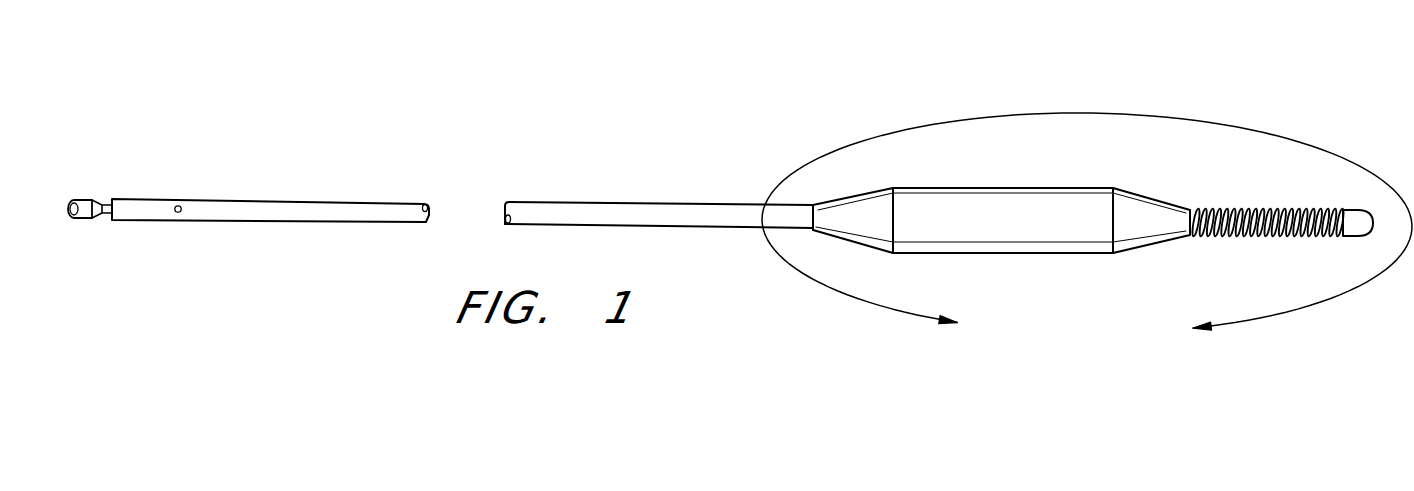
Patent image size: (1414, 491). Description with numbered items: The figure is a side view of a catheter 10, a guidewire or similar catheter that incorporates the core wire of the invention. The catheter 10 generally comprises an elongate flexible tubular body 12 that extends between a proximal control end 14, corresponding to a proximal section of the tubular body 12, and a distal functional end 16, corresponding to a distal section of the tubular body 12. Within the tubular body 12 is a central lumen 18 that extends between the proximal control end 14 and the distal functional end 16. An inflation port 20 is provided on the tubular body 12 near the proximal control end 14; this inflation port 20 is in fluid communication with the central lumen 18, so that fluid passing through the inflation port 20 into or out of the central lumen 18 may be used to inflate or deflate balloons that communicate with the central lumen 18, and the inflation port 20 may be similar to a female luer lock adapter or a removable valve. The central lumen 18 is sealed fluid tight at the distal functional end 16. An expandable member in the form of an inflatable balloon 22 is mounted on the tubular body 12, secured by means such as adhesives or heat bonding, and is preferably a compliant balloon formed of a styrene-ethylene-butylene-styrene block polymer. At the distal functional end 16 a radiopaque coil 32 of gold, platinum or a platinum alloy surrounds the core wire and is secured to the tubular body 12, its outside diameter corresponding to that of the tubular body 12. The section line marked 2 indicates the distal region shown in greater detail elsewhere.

The catheter 10 is at (607, 52).
The tubular body 12 is at (676, 201).
The proximal control end 14 is at (248, 206).
The distal functional end 16 is at (1360, 134).
The central lumen 18 is at (488, 212).
The inflation port 20 is at (179, 213).
The inflatable balloon 22 is at (1068, 186).
The coil 32 is at (1265, 240).
The section line 2- 2 is at (1075, 332).